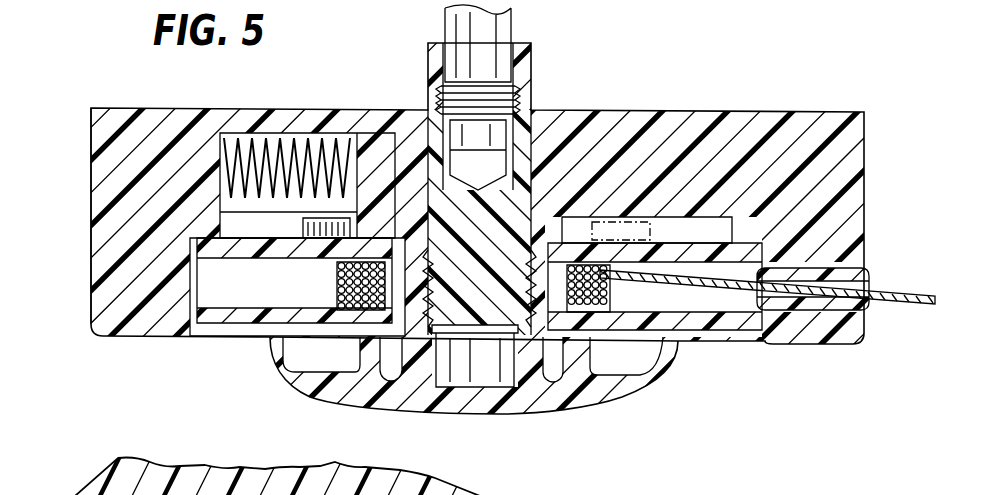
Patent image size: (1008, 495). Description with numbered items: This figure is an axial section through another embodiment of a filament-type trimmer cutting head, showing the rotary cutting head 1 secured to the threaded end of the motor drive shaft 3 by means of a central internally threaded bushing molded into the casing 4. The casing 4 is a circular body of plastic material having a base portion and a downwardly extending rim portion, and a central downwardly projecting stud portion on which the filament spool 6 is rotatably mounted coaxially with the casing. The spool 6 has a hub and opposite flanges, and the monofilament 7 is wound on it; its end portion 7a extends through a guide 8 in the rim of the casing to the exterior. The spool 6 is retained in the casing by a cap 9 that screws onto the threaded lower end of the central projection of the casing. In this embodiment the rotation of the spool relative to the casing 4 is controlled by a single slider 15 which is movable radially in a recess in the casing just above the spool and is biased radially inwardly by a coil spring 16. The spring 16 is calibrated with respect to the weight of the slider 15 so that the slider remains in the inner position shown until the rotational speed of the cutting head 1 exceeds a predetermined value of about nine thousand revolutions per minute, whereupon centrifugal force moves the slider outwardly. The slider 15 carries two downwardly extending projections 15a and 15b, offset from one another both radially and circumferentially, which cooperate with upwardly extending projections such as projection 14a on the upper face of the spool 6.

The rotary cutting head 1 is at (791, 108).
The drive shaft 3 is at (512, 27).
The casing 4 is at (115, 173).
The filament spool 6 is at (717, 332).
The monofilament 7 is at (350, 324).
The end portion 7a is at (912, 305).
The guide 8 is at (806, 310).
The cap 9 is at (482, 412).
The upwardly extending projection 14a is at (300, 228).
The slider 15 is at (375, 145).
The downwardly extending projection 15a is at (322, 248).
The downwardly extending projection 15b is at (420, 222).
The coil spring 16 is at (270, 135).